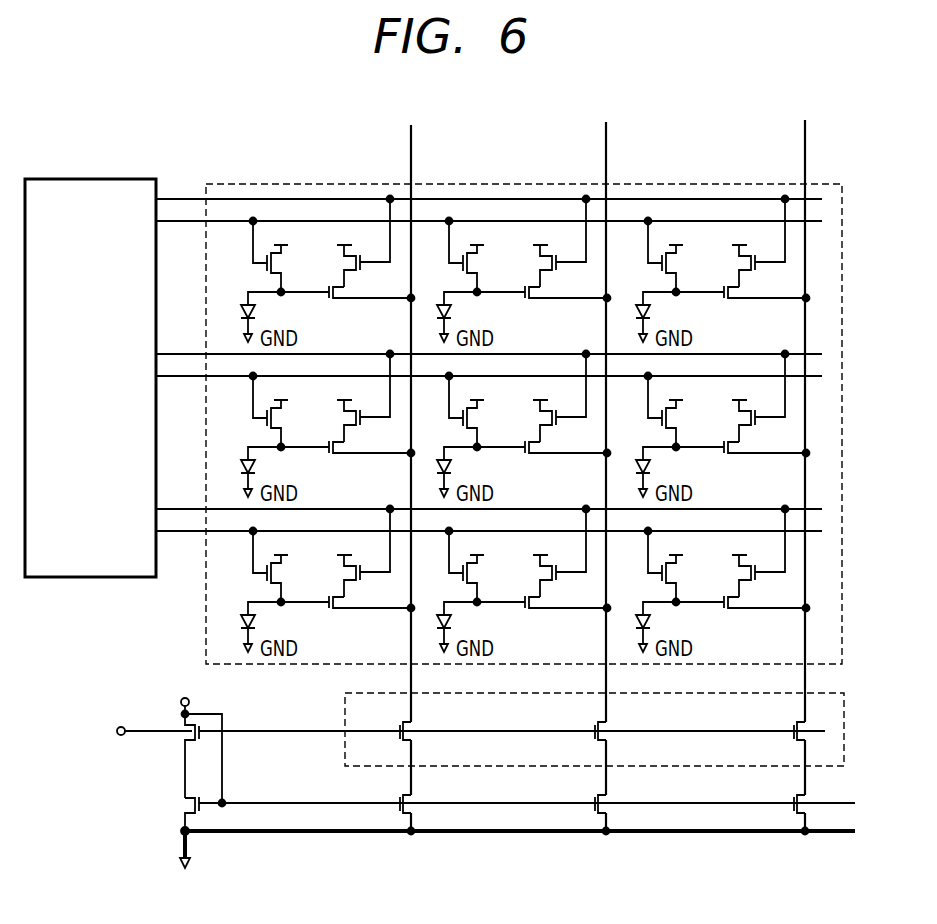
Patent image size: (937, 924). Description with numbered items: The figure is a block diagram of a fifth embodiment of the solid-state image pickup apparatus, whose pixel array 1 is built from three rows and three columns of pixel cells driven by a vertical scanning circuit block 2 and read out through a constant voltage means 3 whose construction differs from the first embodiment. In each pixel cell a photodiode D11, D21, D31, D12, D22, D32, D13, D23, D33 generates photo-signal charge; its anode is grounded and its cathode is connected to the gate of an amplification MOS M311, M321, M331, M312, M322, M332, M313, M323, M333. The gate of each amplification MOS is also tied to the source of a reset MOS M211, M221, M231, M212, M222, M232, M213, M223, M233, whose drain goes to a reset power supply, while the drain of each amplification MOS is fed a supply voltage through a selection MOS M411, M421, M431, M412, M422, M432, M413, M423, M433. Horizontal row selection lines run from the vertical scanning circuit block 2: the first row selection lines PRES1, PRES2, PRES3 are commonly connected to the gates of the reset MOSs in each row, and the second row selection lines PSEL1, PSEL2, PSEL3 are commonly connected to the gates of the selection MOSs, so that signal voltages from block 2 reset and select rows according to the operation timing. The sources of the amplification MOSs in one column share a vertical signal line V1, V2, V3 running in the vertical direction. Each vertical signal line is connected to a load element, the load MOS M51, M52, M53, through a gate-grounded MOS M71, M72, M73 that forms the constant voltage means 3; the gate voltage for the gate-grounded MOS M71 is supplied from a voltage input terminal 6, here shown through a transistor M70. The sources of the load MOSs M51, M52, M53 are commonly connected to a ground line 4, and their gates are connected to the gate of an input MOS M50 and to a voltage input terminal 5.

The pixel region 1 is at (260, 185).
The vertical scanning circuit block 2 is at (121, 179).
The constant voltage means 3 is at (345, 712).
The GND line 4 is at (183, 851).
The voltage input terminal 5 is at (190, 700).
The voltage input terminal 6 is at (118, 729).
The vertical signal line V1 is at (412, 157).
The vertical signal line V2 is at (607, 157).
The vertical signal line V3 is at (806, 157).
The second row selection line PSEL1 is at (451, 200).
The second row selection line PSEL2 is at (451, 355).
The second row selection line PSEL3 is at (451, 510).
The first row selection line PRES1 is at (450, 222).
The first row selection line PRES2 is at (450, 377).
The first row selection line PRES3 is at (450, 532).
The reset MOS M211 is at (291, 255).
The reset MOS M221 is at (487, 255).
The reset MOS M231 is at (686, 255).
The reset MOS M212 is at (291, 410).
The reset MOS M222 is at (487, 410).
The reset MOS M232 is at (686, 410).
The reset MOS M213 is at (291, 565).
The reset MOS M223 is at (487, 565).
The reset MOS M233 is at (686, 565).
The amplification MOS M311 is at (346, 305).
The amplification MOS M321 is at (542, 305).
The amplification MOS M331 is at (741, 305).
The amplification MOS M312 is at (346, 460).
The amplification MOS M322 is at (542, 460).
The amplification MOS M332 is at (741, 460).
The amplification MOS M313 is at (346, 615).
The amplification MOS M323 is at (542, 615).
The amplification MOS M333 is at (741, 615).
The selection MOS M411 is at (366, 247).
The selection MOS M421 is at (562, 247).
The selection MOS M431 is at (761, 247).
The selection MOS M412 is at (366, 402).
The selection MOS M422 is at (562, 402).
The selection MOS M432 is at (761, 402).
The selection MOS M413 is at (366, 557).
The selection MOS M423 is at (562, 557).
The selection MOS M433 is at (761, 557).
The photodiode D11 is at (266, 317).
The photodiode D21 is at (462, 317).
The photodiode D31 is at (661, 317).
The photodiode D12 is at (266, 472).
The photodiode D22 is at (462, 472).
The photodiode D32 is at (661, 472).
The photodiode D13 is at (266, 627).
The photodiode D23 is at (462, 627).
The photodiode D33 is at (661, 627).
The current source transistor M70 is at (481, 756).
The input MOS M50 is at (496, 812).
The gate-grounded MOS M71 is at (428, 723).
The gate-grounded MOS M72 is at (622, 723).
The gate-grounded MOS M73 is at (778, 722).
The load MOS M51 is at (428, 815).
The load MOS M52 is at (623, 815).
The load MOS M53 is at (821, 815).